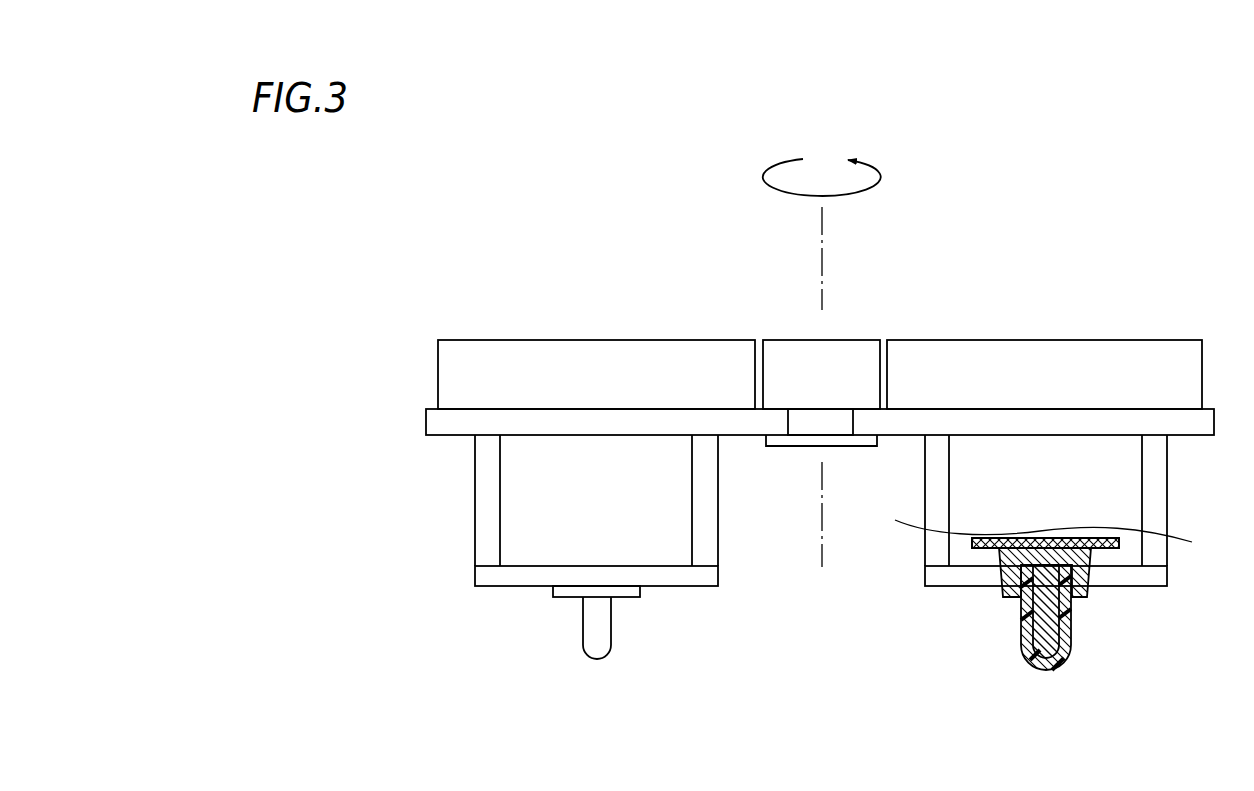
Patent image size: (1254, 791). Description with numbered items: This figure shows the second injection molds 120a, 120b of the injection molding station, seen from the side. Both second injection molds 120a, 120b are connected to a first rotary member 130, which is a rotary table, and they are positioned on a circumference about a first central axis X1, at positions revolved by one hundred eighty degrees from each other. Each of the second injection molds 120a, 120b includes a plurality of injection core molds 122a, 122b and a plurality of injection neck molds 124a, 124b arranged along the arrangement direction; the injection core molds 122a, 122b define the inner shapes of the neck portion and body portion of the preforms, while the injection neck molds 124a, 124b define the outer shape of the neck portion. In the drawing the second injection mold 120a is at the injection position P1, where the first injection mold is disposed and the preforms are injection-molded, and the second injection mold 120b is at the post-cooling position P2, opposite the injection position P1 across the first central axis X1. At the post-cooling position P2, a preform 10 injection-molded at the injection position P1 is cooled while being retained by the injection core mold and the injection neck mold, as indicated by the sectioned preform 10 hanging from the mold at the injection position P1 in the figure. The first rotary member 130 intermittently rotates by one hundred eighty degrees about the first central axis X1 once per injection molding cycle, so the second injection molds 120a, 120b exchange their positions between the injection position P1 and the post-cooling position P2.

The first rotary member 130 is at (1110, 340).
The first central axis X1 is at (822, 250).
The injection position P1 is at (1023, 316).
The post-cooling position P2 is at (593, 318).
The second injection mold 120a is at (1055, 577).
The second injection mold 120b is at (626, 570).
The injection core mold 122a is at (1062, 663).
The injection core mold 122b is at (607, 648).
The injection neck mold 124a is at (1082, 598).
The injection neck mold 124b is at (640, 589).
The preform 10 is at (1022, 647).